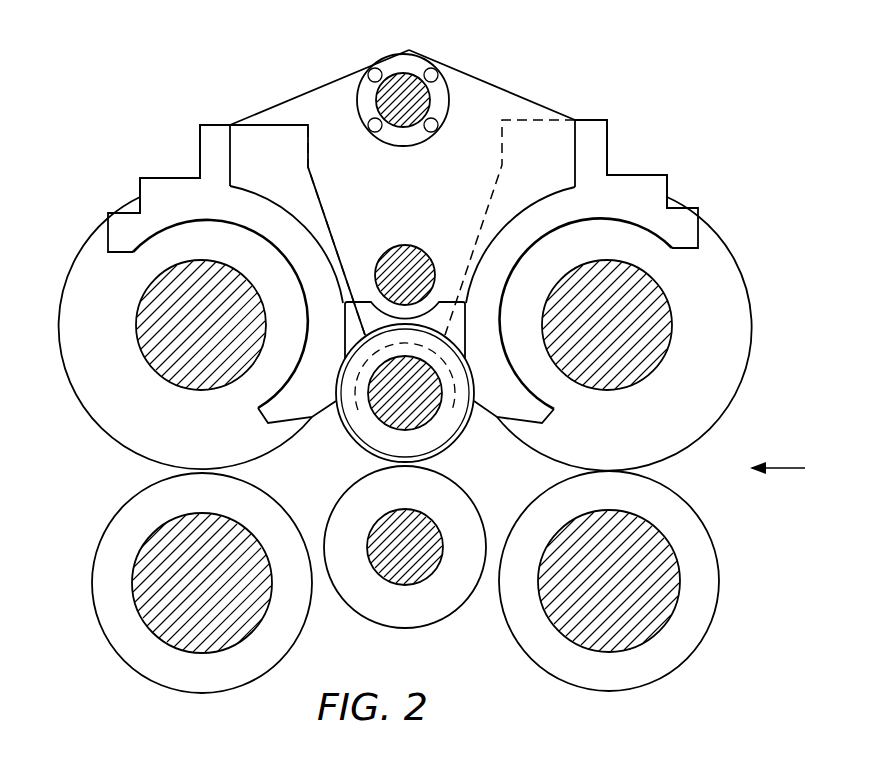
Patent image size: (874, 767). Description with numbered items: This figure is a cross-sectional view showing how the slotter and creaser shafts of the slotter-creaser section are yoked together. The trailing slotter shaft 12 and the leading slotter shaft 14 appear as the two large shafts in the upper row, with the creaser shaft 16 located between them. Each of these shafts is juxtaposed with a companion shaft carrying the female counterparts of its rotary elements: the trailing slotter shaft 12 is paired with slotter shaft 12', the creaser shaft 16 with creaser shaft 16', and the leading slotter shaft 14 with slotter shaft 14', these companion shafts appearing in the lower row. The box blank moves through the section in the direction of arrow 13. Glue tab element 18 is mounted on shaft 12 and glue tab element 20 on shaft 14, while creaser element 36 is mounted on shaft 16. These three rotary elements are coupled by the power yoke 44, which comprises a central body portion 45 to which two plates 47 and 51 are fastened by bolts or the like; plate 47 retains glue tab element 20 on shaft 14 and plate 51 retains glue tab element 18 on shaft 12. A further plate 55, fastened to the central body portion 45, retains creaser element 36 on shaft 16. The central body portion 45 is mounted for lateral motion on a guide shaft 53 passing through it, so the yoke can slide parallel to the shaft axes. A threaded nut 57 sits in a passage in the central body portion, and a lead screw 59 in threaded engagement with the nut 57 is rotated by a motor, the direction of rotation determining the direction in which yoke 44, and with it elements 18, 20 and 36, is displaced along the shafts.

The trailing slotter shaft 12 is at (628, 325).
The slotter shaft 12' is at (609, 581).
The arrow 13 is at (780, 456).
The leading slotter shaft 14 is at (201, 339).
The slotter shaft 14' is at (202, 583).
The creaser shaft 16 is at (434, 400).
The creaser shaft 16' is at (405, 547).
The glue tab element 18 is at (727, 266).
The glue tab element 20 is at (80, 259).
The creaser element 36 is at (352, 420).
The power yoke 44 is at (318, 62).
The central body portion 45 is at (490, 97).
The plate 47 is at (165, 186).
The plate 51 is at (658, 186).
The guide shaft 53 is at (392, 255).
The plate 55 is at (437, 312).
The threaded nut 57 is at (440, 85).
The lead screw 59 is at (400, 76).